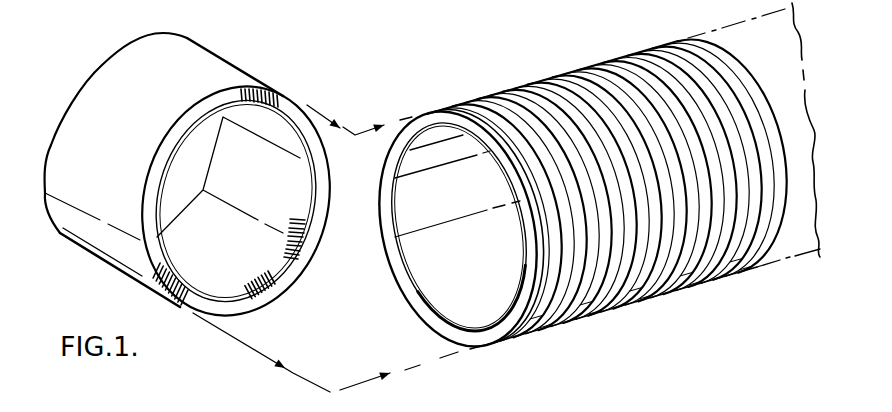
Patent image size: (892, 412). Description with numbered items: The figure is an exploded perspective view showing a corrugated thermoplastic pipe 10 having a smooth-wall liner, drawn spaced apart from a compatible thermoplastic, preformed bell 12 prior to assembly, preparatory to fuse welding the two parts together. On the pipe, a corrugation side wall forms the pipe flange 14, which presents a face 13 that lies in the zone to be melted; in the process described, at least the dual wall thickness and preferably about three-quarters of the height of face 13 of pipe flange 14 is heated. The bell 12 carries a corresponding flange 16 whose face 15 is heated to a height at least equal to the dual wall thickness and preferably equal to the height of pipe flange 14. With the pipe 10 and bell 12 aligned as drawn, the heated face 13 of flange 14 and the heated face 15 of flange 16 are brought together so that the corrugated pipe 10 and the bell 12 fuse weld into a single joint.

The corrugated thermoplastic pipe 10 is at (512, 80).
The preformed bell 12 is at (244, 50).
The face of pipe flange 13 is at (420, 303).
The pipe flange 14 is at (497, 328).
The face of flange 15 is at (270, 278).
The flange 16 is at (180, 311).